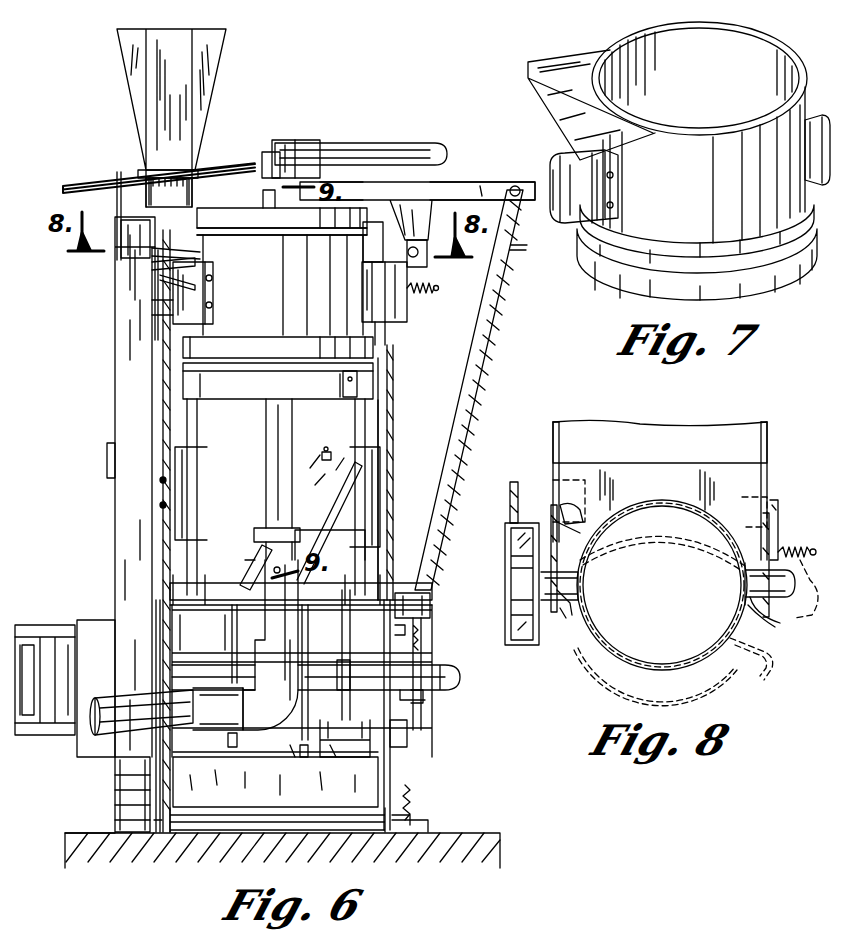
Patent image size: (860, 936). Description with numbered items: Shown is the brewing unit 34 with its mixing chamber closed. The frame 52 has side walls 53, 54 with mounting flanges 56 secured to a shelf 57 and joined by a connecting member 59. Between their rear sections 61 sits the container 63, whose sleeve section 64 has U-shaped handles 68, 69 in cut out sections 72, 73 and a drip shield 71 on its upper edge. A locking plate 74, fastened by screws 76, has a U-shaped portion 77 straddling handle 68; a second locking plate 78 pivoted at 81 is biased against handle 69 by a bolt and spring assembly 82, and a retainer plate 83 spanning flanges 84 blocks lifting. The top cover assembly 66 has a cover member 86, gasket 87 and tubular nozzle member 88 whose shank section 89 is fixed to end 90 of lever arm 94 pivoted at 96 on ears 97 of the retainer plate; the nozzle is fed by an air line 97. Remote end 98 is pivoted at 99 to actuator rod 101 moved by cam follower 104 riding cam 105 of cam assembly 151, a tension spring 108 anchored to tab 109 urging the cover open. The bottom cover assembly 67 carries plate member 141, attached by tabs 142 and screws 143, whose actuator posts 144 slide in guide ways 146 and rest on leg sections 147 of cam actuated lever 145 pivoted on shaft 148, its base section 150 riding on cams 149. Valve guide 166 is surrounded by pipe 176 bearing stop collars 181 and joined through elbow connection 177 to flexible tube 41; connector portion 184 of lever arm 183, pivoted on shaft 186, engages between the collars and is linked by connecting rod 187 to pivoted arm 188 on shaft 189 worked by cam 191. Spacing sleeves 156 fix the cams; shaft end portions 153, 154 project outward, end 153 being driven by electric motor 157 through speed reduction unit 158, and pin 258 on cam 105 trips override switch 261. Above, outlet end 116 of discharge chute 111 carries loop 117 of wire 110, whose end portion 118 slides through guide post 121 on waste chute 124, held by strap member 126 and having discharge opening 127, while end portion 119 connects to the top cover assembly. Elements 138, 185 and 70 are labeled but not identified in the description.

In FIG. 6, the discharge chute 111 is at (188, 143).
In FIG. 6, the wire 110 is at (125, 172).
In FIG. 6, the loop 117 is at (152, 170).
In FIG. 6, the outlet end 116 is at (193, 192).
In FIG. 6, the wire end portion 118 is at (75, 186).
In FIG. 6, the wire end portion 119 is at (210, 167).
In FIG. 6, the guide post 121 is at (114, 203).
In FIG. 6, the waste chute 124 is at (112, 412).
In FIG. 6, the strap member 126 is at (107, 470).
In FIG. 6, the drip shield 71 is at (121, 232).
In FIG. 7, the drip shield 71 is at (545, 82).
In FIG. 6, the frame 52 is at (163, 432).
In FIG. 6, the side wall 53 is at (158, 835).
In FIG. 8, the side wall 53 is at (553, 427).
In FIG. 6, the retainer plate 83 is at (170, 253).
In FIG. 8, the retainer plate 83 is at (645, 473).
In FIG. 6, the horizontal flanges 84 is at (170, 282).
In FIG. 8, the horizontal flanges 84 is at (568, 494).
In FIG. 6, the container 63 is at (170, 316).
In FIG. 6, the rear sections 61 is at (165, 336).
In FIG. 8, the rear sections 61 is at (553, 452).
In FIG. 6, the top cover assembly 66 is at (228, 203).
In FIG. 6, the fluid sealing gasket 87 is at (248, 230).
In FIG. 6, the tubular nozzle member 88 is at (270, 222).
In FIG. 6, the cover member 86 is at (350, 207).
In FIG. 6, the shank section 89 is at (276, 140).
In FIG. 6, the lever arm end 90 is at (264, 152).
In FIG. 6, the air line 97 is at (385, 143).
In FIG. 6, the lever arm 94 is at (432, 182).
In FIG. 6, the lever arm end 98 is at (496, 182).
In FIG. 6, the pivotal connection 99 is at (517, 186).
In FIG. 6, the pivot 96 is at (422, 264).
In FIG. 6, the bolt and spring assembly 82 is at (430, 294).
In FIG. 8, the bolt and spring assembly 82 is at (810, 550).
In FIG. 6, the second locking plate 78 is at (407, 318).
In FIG. 8, the second locking plate 78 is at (778, 522).
In FIG. 6, the actuator rod 101 is at (496, 327).
In FIG. 6, the bottom cover assembly 67 is at (329, 405).
In FIG. 6, the screws 143 is at (357, 380).
In FIG. 6, the brewing unit 34 is at (402, 408).
In FIG. 6, the actuator posts 144 is at (380, 434).
In FIG. 6, the guide ways 146 is at (380, 487).
In FIG. 6, the shaft 186 is at (160, 510).
In FIG. 6, the circular plate member 141 is at (240, 400).
In FIG. 6, the valve guide 166 is at (250, 479).
In FIG. 6, the stop collars 181 is at (262, 530).
In FIG. 6, the tabs 142 is at (350, 400).
In FIG. 6, the lever arm 183 is at (329, 515).
In FIG. 6, the connector portion 184 is at (245, 550).
In FIG. 6, the cam actuated lever 145 is at (236, 570).
In FIG. 6, the connecting rod 187 is at (365, 554).
In FIG. 6, the leg sections 147 is at (172, 587).
In FIG. 6, the cam follower 104 is at (425, 597).
In FIG. 6, the cam 105 is at (425, 642).
In FIG. 6, the shaft 148 is at (220, 612).
In FIG. 6, the base section 150 is at (205, 607).
In FIG. 6, the tubular pipe 176 is at (258, 634).
In FIG. 6, the flexible tube 41 is at (135, 700).
In FIG. 6, the cam assembly 151 is at (332, 677).
In FIG. 6, the shaft end portion 154 is at (430, 697).
In FIG. 6, the spacing collars 156 is at (355, 662).
In FIG. 6, the pin 258 is at (405, 642).
In FIG. 6, the cam 191 is at (346, 707).
In FIG. 6, the override switch 261 is at (408, 734).
In FIG. 6, the pivoted arm 188 is at (375, 752).
In FIG. 6, the side wall 54 is at (392, 777).
In FIG. 8, the side wall 54 is at (770, 432).
In FIG. 6, the tension spring 108 is at (412, 802).
In FIG. 6, the ear 109 is at (415, 822).
In FIG. 6, the base box 138 is at (283, 800).
In FIG. 6, the elbow connection 177 is at (268, 742).
In FIG. 6, the cams 149 is at (228, 745).
In FIG. 6, the shaft 189 is at (293, 762).
In FIG. 6, the bolt 185 is at (348, 759).
In FIG. 6, the connecting member 59 is at (330, 830).
In FIG. 6, the mounting flange 56 is at (430, 834).
In FIG. 6, the shelf 57 is at (82, 832).
In FIG. 6, the discharge opening 127 is at (115, 787).
In FIG. 6, the speed reduction unit 158 is at (104, 657).
In FIG. 6, the shaft end portion 153 is at (60, 717).
In FIG. 6, the electric motor 157 is at (45, 667).
In FIG. 7, the container sleeve section 64 is at (775, 54).
In FIG. 8, the container sleeve section 64 is at (618, 660).
In FIG. 7, the handle member 69 is at (815, 120).
In FIG. 8, the handle member 69 is at (760, 627).
In FIG. 7, the handle member 68 is at (565, 222).
In FIG. 8, the handle member 68 is at (573, 607).
In FIG. 8, the locking plate 74 is at (545, 502).
In FIG. 8, the U-shaped portion 77 is at (541, 582).
In FIG. 8, the cut out section 72 is at (560, 617).
In FIG. 8, the screws 76 is at (560, 550).
In FIG. 8, the pivot 81 is at (770, 517).
In FIG. 8, the cut out section 73 is at (798, 584).
In FIG. 8, the hook 70 is at (785, 625).